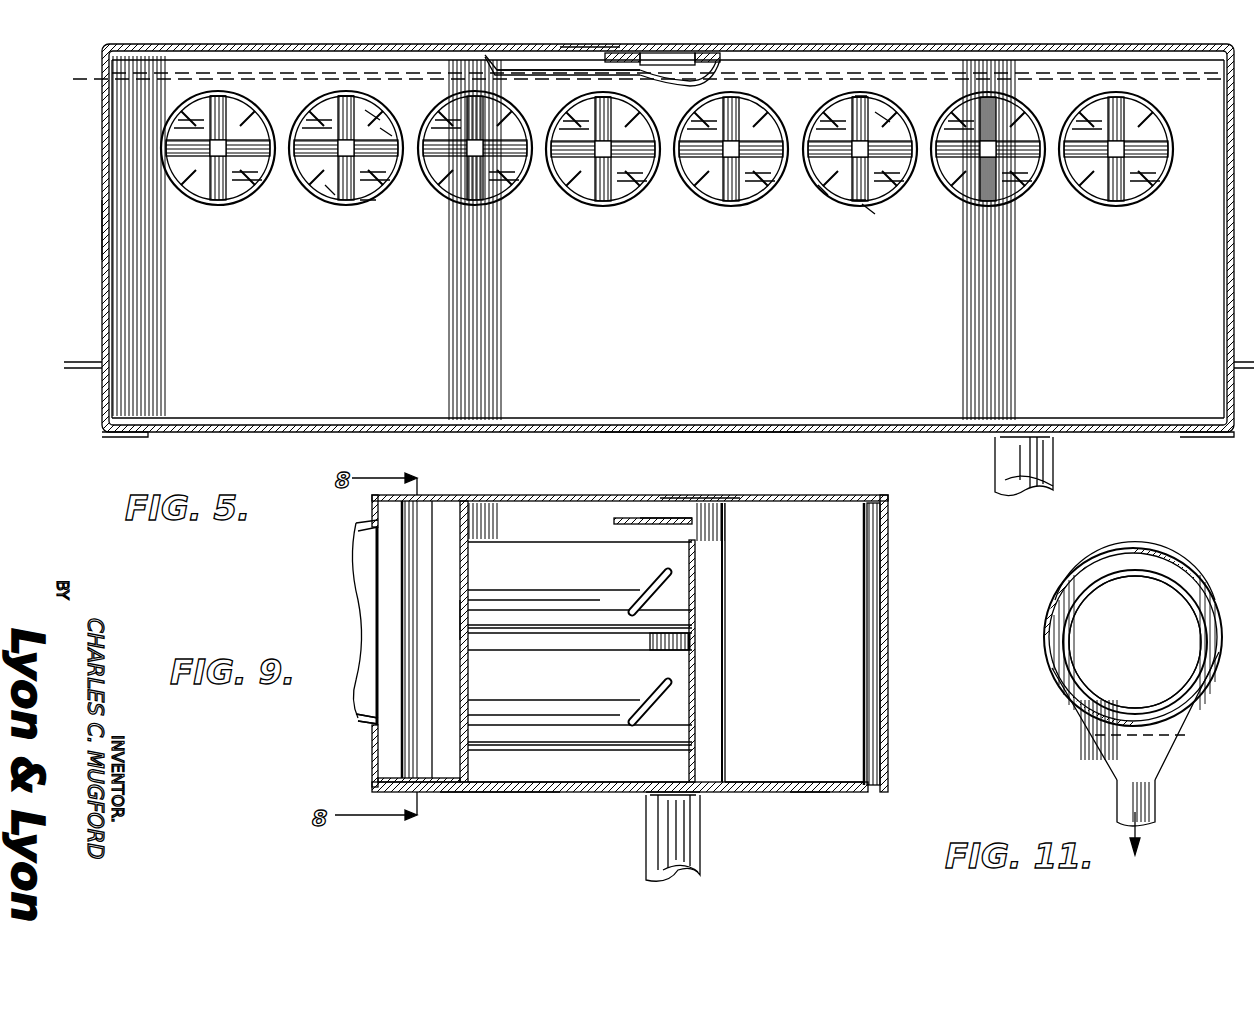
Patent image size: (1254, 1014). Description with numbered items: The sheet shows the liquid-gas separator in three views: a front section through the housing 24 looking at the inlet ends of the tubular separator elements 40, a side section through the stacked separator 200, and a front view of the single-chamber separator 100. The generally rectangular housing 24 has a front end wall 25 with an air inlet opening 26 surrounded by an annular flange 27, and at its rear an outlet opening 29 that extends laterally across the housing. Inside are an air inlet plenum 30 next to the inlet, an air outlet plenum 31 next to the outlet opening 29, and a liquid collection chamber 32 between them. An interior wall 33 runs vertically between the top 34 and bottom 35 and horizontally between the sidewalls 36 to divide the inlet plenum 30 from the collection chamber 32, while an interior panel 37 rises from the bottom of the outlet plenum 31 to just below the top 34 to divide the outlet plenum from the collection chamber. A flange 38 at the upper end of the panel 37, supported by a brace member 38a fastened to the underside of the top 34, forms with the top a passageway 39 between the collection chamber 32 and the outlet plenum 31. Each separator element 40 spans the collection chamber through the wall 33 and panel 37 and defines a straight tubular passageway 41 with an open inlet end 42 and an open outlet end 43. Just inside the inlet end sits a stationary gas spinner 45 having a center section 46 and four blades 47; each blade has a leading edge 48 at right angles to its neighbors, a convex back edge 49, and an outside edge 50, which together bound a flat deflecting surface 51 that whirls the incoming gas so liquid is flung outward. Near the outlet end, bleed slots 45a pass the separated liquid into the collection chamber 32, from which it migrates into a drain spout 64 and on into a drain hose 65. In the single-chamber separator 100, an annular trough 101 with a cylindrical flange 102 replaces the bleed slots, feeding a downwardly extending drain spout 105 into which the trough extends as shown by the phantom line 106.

In FIG. 5, the housing 24 is at (1140, 46).
In FIG. 9, the front end wall 25 is at (372, 763).
In FIG. 9, the air inlet opening 26 is at (375, 608).
In FIG. 9, the annular flange 27 is at (360, 724).
In FIG. 9, the outlet opening 29 is at (870, 547).
In FIG. 9, the air inlet plenum 30 is at (440, 743).
In FIG. 9, the air outlet plenum 31 is at (794, 755).
In FIG. 5, the liquid collection chamber 32 is at (700, 80).
In FIG. 9, the liquid collection chamber 32 is at (578, 769).
In FIG. 5, the interior wall 33 is at (630, 308).
In FIG. 9, the interior wall 33 is at (470, 530).
In FIG. 5, the top 34 is at (590, 47).
In FIG. 9, the top 34 is at (697, 497).
In FIG. 5, the bottom 35 is at (698, 430).
In FIG. 9, the bottom 35 is at (500, 793).
In FIG. 5, the sidewalls 36 is at (102, 232).
In FIG. 9, the interior panel 37 is at (697, 646).
In FIG. 5, the flange 38 is at (500, 62).
In FIG. 9, the flange 38 is at (614, 516).
In FIG. 5, the brace member 38a is at (650, 52).
In FIG. 5, the passageway 39 is at (542, 54).
In FIG. 9, the passageway 39 is at (650, 510).
In FIG. 5, the tubular separator element 40 is at (220, 206).
In FIG. 9, the tubular separator element 40 is at (562, 540).
In FIG. 11, the tubular passageway 41 is at (1135, 642).
In FIG. 5, the inlet end 42 is at (368, 205).
In FIG. 9, the inlet end 42 is at (462, 618).
In FIG. 9, the outlet end 43 is at (697, 575).
In FIG. 5, the gas spinner 45 is at (372, 115).
In FIG. 9, the bleed slots 45a is at (655, 600).
In FIG. 5, the center section 46 is at (226, 150).
In FIG. 5, the blades 47 is at (180, 132).
In FIG. 5, the leading edge 48 is at (210, 98).
In FIG. 5, the back edge 49 is at (385, 128).
In FIG. 5, the outside edge 50 is at (350, 95).
In FIG. 5, the deflecting surface 51 is at (328, 190).
In FIG. 5, the drain spout 64 is at (1024, 466).
In FIG. 9, the drain spout 64 is at (698, 836).
In FIG. 9, the drain hose 65 is at (703, 858).
In FIG. 11, the drain hose 65 is at (1152, 818).
In FIG. 11, the single-chamber separator 100 is at (1186, 570).
In FIG. 11, the annular trough 101 is at (1212, 592).
In FIG. 11, the cylindrical flange 102 is at (1178, 580).
In FIG. 11, the drain spout 105 is at (1160, 762).
In FIG. 11, the phantom line 106 is at (1190, 727).
In FIG. 9, the stacked separator 200 is at (808, 792).